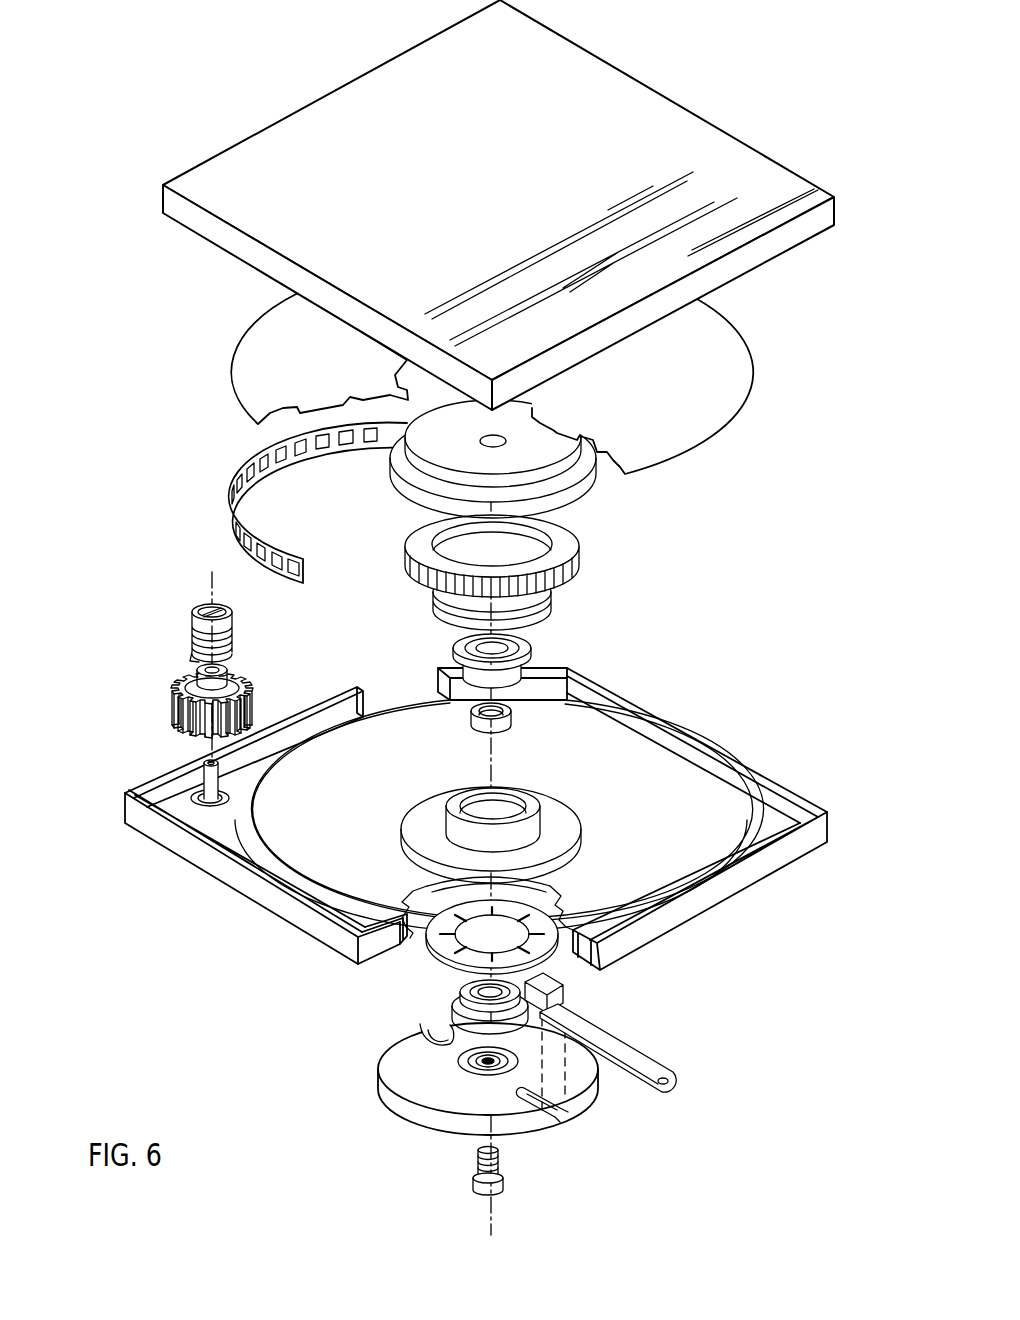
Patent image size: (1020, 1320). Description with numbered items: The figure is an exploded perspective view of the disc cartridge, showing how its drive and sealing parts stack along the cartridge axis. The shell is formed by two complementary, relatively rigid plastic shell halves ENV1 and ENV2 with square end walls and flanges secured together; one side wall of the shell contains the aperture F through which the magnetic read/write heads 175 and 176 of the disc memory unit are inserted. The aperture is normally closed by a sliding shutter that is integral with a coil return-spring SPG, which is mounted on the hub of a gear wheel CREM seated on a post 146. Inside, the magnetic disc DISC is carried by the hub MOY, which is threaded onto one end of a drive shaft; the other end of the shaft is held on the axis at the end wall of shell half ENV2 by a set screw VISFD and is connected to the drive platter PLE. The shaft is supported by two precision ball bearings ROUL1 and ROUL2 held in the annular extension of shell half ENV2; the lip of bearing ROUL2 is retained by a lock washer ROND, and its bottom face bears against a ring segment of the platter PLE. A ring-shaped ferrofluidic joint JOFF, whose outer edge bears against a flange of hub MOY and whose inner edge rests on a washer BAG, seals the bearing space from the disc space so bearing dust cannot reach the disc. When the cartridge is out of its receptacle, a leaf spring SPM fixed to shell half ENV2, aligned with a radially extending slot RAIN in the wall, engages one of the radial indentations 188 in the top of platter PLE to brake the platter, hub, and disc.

The shell half ENV1 is at (223, 162).
The magnetic disc DISC is at (243, 373).
The hub MOY is at (578, 478).
The ferrofluidic joint JOFF is at (580, 543).
The washer BAG is at (557, 607).
The bearing ROUL1 is at (540, 645).
The shell half ENV2 is at (640, 758).
The coil return-spring SPG is at (193, 640).
The gear wheel CREM is at (172, 693).
The magnetic read/write head 175 is at (318, 560).
The magnetic read/write head 176 is at (255, 587).
The aperture F is at (447, 688).
The post 146 is at (197, 805).
The lock washer ROND is at (462, 965).
The bearing ROUL2 is at (462, 993).
The leaf spring SPM is at (568, 993).
The radially extending indentation 188 is at (435, 1021).
The drive platter PLE is at (523, 1128).
The radially extending slot RAIN is at (563, 1118).
The set screw VISFD is at (503, 1175).